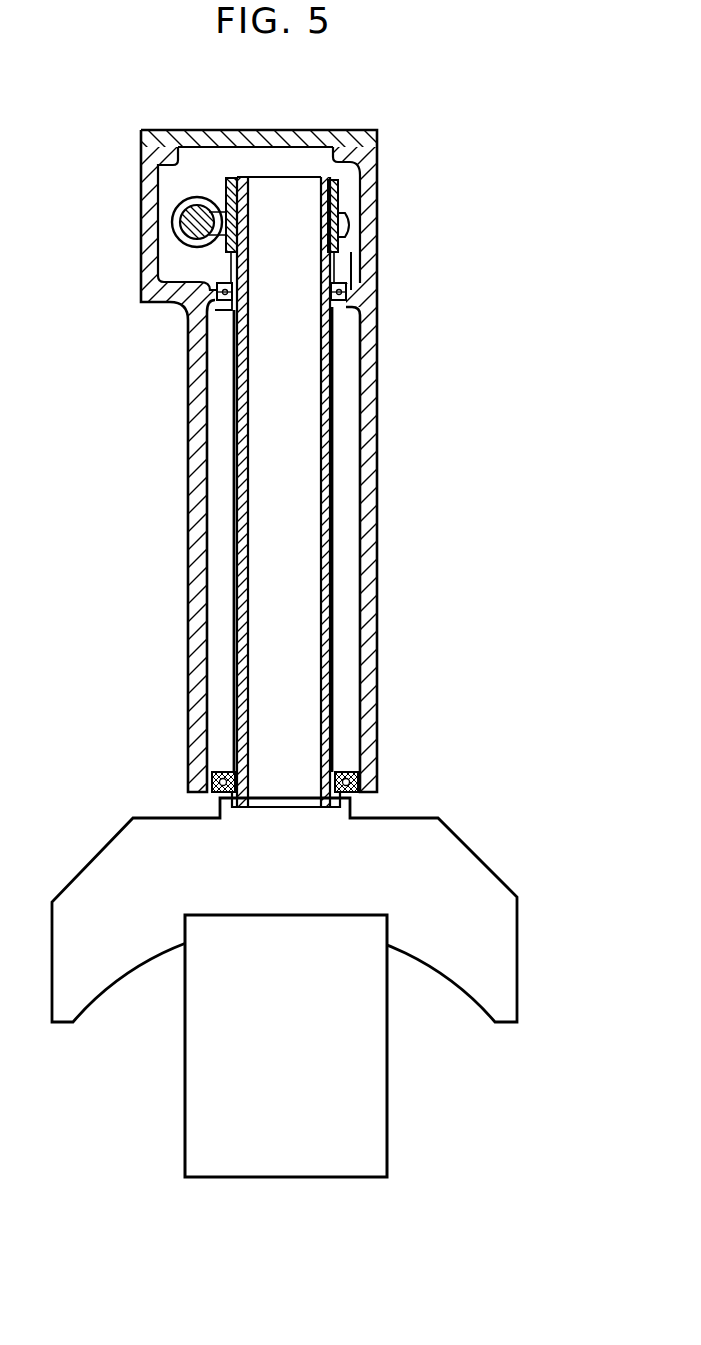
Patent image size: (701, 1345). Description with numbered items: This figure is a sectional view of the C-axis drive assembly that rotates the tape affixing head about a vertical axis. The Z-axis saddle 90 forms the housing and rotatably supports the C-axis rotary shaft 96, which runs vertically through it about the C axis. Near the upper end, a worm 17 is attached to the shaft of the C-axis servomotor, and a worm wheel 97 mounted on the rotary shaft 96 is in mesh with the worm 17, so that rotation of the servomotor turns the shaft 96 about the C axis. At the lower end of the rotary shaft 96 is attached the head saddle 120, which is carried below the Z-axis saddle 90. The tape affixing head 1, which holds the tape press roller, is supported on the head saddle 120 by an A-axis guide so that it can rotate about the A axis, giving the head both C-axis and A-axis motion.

The tape affixing head 1 is at (362, 1133).
The worm 17 is at (199, 196).
The Z-axis saddle 90 is at (377, 558).
The C-axis rotary shaft 96 is at (332, 392).
The worm wheel 97 is at (351, 223).
The head saddle 120 is at (473, 845).